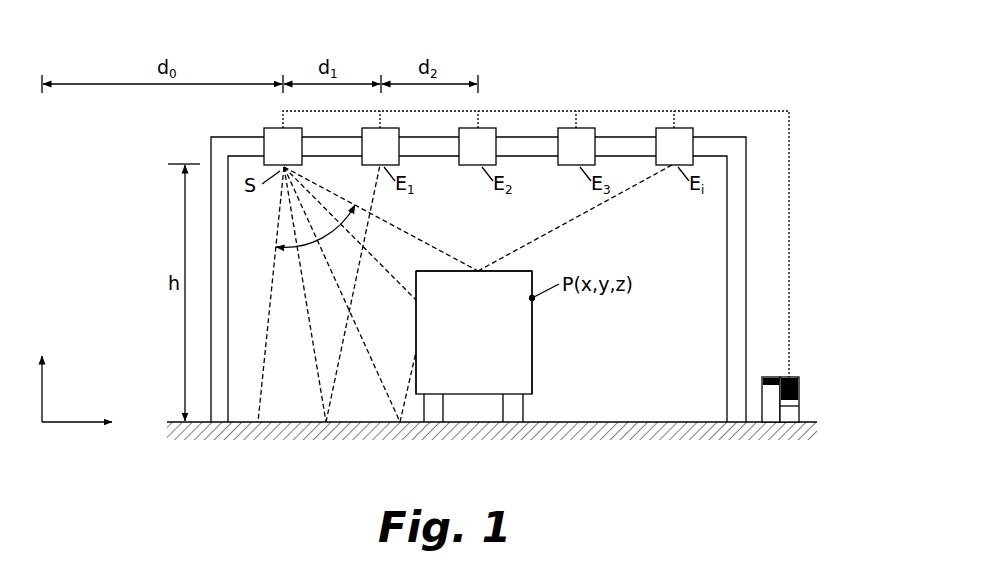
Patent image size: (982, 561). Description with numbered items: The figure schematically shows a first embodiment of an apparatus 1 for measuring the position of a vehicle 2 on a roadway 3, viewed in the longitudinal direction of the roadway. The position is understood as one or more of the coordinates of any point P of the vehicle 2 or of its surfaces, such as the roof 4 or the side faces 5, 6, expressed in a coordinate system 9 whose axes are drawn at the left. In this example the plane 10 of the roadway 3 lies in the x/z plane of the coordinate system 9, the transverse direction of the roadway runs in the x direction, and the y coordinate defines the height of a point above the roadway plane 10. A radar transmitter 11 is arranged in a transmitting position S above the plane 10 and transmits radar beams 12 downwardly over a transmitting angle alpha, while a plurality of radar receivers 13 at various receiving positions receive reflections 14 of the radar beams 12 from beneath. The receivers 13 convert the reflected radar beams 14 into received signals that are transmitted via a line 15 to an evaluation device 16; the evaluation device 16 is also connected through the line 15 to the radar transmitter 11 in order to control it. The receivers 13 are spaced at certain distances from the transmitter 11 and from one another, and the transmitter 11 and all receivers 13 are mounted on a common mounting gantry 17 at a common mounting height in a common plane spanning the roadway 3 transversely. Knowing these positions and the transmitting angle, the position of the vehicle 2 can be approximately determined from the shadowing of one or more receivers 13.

The apparatus 1 is at (790, 47).
The vehicle 2 is at (518, 367).
The roadway 3 is at (664, 421).
The roof 4 is at (520, 266).
The side face 5 is at (414, 322).
The side face 6 is at (534, 325).
The coordinate system 9 is at (68, 423).
The plane of the roadway 10 is at (591, 420).
The radar transmitter 11 is at (270, 127).
The radar beams 12 is at (413, 240).
The radar receivers 13 is at (485, 127).
The reflections 14 is at (530, 243).
The line 15 is at (790, 208).
The evaluation device 16 is at (798, 403).
The mounting gantry 17 is at (735, 313).